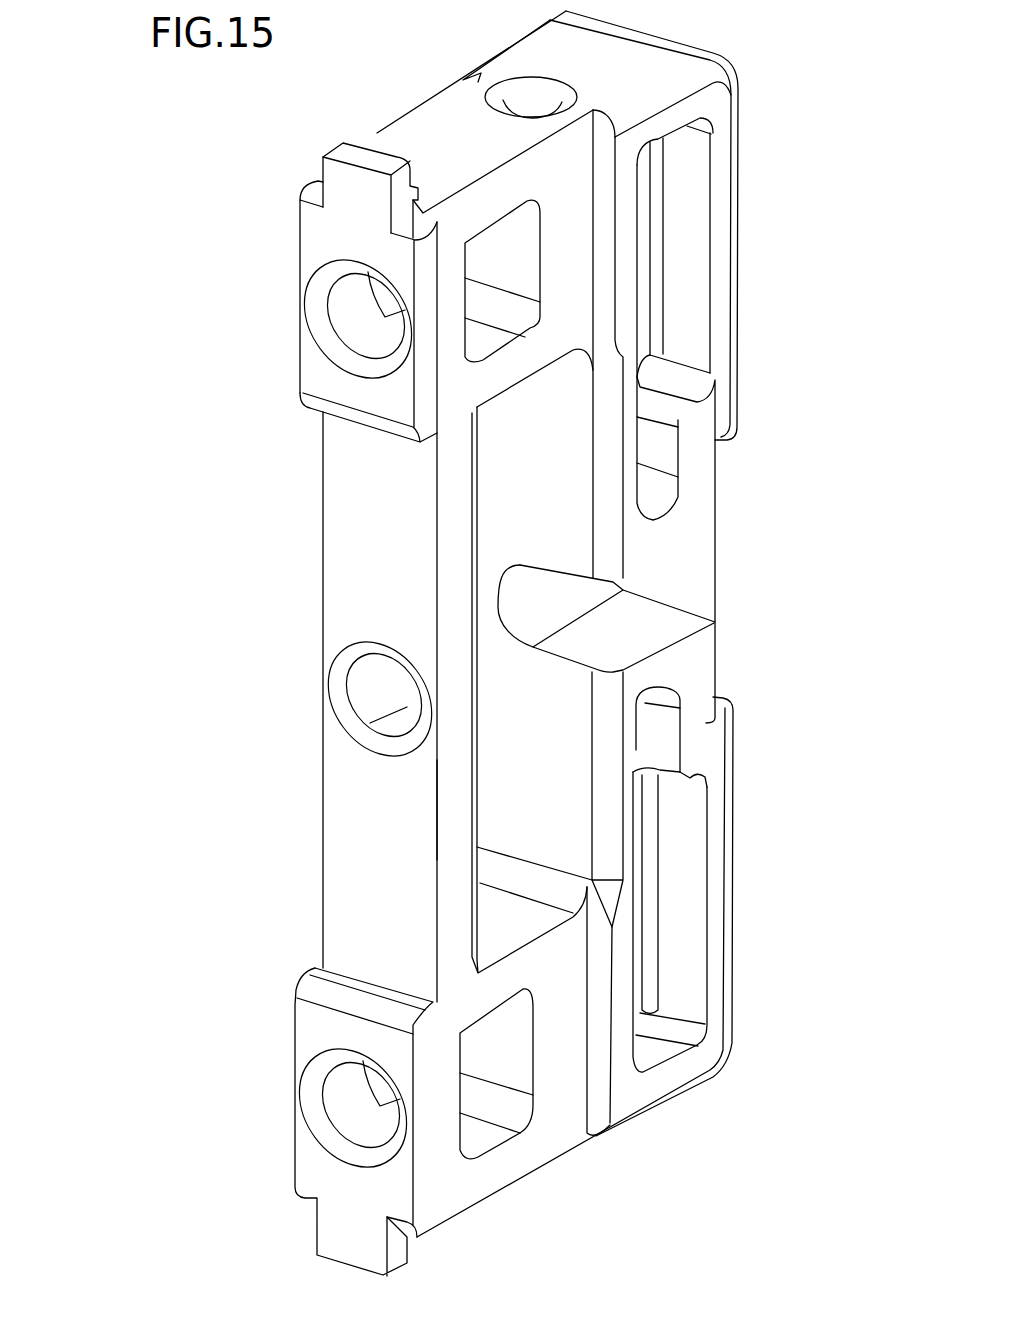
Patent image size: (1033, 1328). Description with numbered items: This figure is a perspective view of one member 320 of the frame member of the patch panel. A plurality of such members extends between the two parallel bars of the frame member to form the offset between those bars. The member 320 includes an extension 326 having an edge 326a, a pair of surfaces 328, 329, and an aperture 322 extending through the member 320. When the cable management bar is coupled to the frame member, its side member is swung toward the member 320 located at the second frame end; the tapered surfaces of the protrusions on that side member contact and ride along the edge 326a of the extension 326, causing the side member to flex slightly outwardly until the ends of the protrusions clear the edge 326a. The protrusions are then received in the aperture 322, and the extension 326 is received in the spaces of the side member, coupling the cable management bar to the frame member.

The member 320 is at (203, 335).
The aperture 322 is at (542, 533).
The extension 326 is at (350, 538).
The edge 326a is at (433, 805).
The surface 328 is at (525, 392).
The surface 329 is at (519, 928).